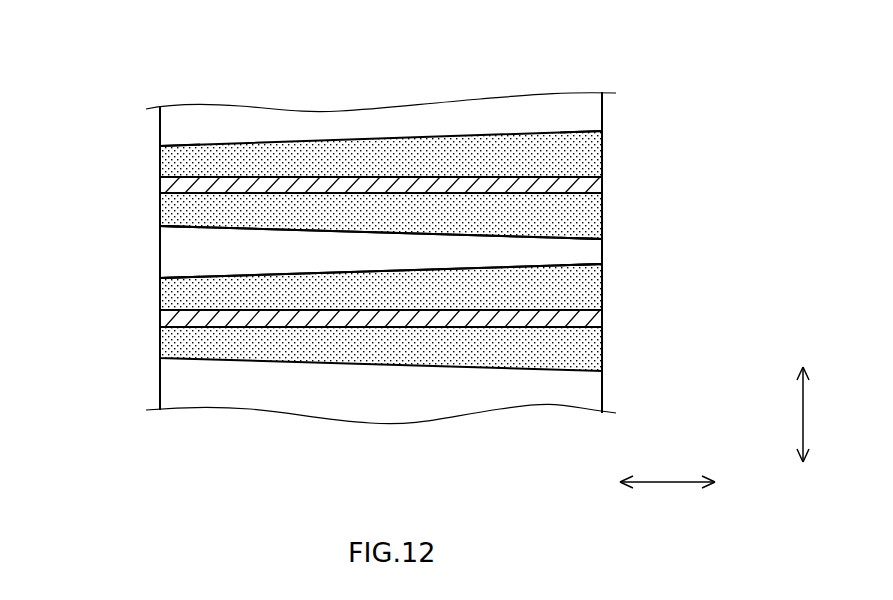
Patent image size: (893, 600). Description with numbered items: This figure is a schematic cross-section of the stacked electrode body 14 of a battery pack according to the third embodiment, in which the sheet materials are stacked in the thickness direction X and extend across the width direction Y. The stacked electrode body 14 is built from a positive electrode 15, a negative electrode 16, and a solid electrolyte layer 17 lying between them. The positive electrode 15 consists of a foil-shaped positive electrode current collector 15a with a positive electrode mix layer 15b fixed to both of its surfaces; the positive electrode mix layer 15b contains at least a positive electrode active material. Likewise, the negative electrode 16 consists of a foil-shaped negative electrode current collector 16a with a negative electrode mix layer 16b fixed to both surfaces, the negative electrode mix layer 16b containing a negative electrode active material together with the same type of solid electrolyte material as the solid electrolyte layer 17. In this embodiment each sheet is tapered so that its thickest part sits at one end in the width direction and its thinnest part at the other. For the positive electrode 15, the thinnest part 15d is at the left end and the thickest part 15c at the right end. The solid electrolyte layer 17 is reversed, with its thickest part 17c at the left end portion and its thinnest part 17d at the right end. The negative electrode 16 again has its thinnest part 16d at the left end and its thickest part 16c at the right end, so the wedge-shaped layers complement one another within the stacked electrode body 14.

The stacked electrode body 14 is at (114, 31).
The positive electrode 15 is at (416, 165).
The positive electrode current collector 15a is at (603, 179).
The positive electrode mix layer 15b is at (603, 148).
The thickest part 15c is at (587, 128).
The thinnest part 15d is at (176, 145).
The negative electrode 16 is at (456, 385).
The negative electrode current collector 16a is at (603, 325).
The negative electrode mix layer 16b is at (603, 303).
The thickest part 16c is at (584, 262).
The thinnest part 16d is at (180, 277).
The solid electrolyte layer 17 is at (167, 246).
The thickest part 17c is at (178, 216).
The thinnest part 17d is at (588, 237).